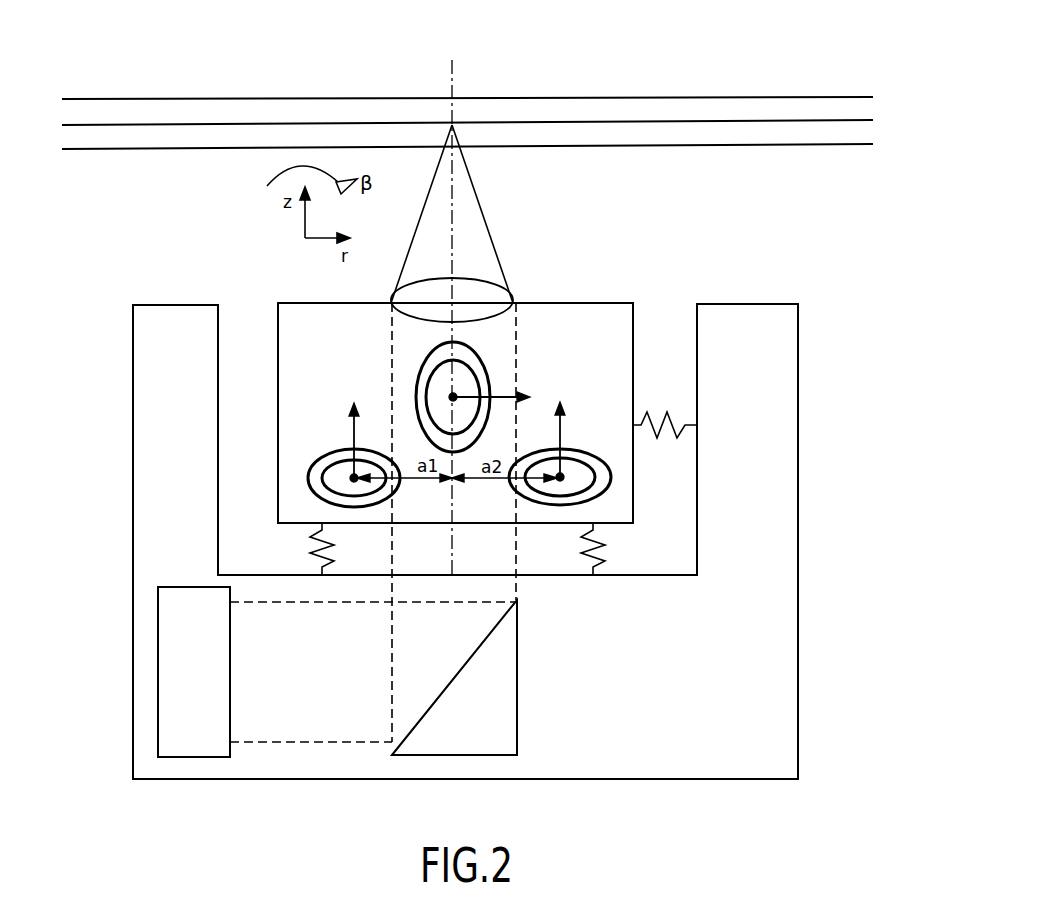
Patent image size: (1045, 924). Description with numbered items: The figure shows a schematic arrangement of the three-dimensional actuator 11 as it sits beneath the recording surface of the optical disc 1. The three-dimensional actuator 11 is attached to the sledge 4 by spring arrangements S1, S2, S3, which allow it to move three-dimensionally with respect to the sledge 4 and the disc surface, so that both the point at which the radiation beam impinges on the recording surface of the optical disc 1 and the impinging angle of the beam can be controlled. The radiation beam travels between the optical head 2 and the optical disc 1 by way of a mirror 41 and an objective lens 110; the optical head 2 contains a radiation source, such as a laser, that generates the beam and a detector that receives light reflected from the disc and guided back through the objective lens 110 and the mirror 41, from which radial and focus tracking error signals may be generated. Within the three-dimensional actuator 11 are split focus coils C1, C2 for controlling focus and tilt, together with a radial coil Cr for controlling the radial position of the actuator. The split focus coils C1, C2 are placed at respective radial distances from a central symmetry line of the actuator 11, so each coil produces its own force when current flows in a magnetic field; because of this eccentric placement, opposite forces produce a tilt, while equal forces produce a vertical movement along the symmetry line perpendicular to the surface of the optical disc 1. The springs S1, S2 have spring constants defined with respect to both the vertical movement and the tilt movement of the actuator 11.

The optical disc 1 is at (556, 130).
The optical head 2 is at (60, 818).
The sledge 4 is at (663, 850).
The 3D actuator 11 is at (220, 230).
The mirror 41 is at (585, 713).
The objective lens 110 is at (483, 295).
The split focus coil C1 is at (308, 478).
The split focus coil C2 is at (652, 263).
The radial coil Cr is at (480, 360).
The spring S1 is at (339, 549).
The spring S2 is at (613, 549).
The spring S3 is at (665, 411).